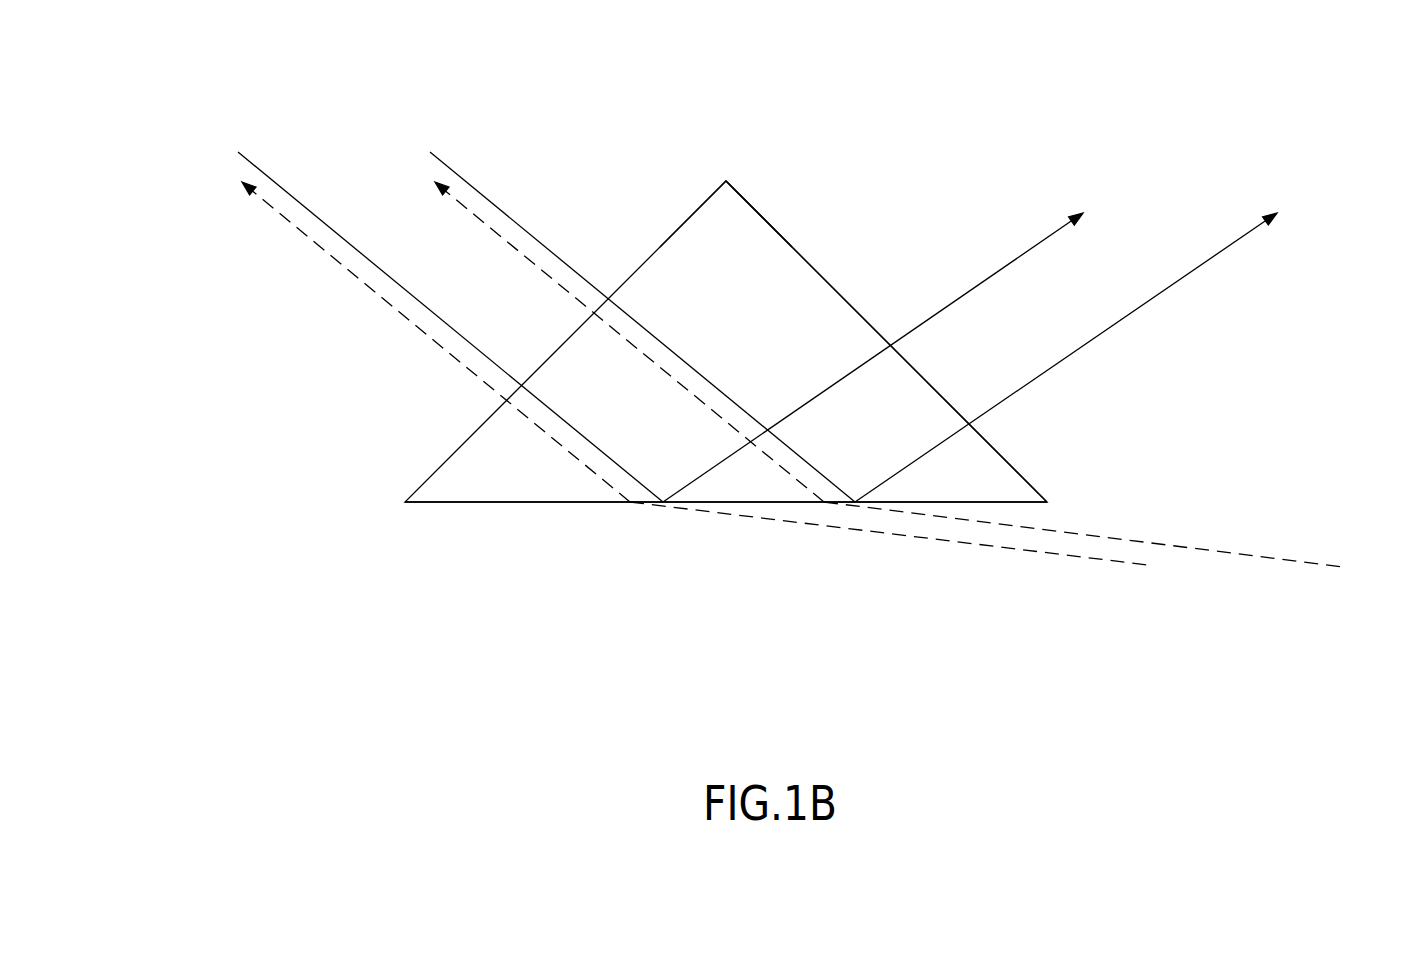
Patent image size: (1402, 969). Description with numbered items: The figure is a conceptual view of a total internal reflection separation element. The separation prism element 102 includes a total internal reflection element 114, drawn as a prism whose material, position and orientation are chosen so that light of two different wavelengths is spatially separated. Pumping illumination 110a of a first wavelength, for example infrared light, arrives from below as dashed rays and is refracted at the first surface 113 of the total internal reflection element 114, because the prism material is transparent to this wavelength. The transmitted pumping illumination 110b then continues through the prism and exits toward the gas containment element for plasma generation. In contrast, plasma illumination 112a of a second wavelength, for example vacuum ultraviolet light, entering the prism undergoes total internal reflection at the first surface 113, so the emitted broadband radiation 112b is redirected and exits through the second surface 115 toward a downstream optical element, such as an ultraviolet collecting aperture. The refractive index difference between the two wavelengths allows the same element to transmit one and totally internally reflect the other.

The separation prism element 102 is at (372, 75).
The total internal reflection element 114 is at (736, 166).
The second surface 115 is at (846, 300).
The first surface 113 is at (485, 506).
The plasma illumination 112a is at (493, 182).
The emitted broadband radiation 112b is at (975, 240).
The pumping illumination 110b is at (323, 272).
The pumping illumination 110a is at (1166, 526).